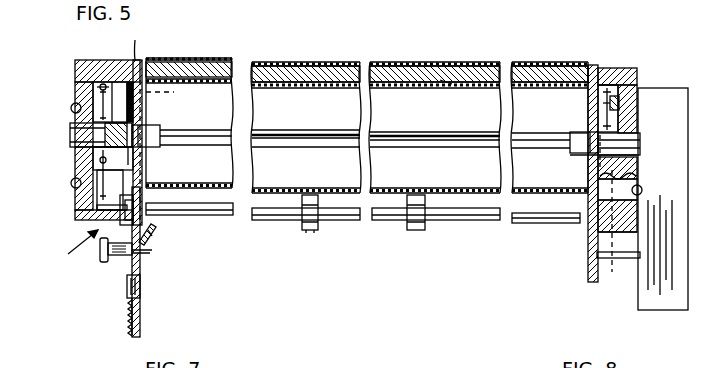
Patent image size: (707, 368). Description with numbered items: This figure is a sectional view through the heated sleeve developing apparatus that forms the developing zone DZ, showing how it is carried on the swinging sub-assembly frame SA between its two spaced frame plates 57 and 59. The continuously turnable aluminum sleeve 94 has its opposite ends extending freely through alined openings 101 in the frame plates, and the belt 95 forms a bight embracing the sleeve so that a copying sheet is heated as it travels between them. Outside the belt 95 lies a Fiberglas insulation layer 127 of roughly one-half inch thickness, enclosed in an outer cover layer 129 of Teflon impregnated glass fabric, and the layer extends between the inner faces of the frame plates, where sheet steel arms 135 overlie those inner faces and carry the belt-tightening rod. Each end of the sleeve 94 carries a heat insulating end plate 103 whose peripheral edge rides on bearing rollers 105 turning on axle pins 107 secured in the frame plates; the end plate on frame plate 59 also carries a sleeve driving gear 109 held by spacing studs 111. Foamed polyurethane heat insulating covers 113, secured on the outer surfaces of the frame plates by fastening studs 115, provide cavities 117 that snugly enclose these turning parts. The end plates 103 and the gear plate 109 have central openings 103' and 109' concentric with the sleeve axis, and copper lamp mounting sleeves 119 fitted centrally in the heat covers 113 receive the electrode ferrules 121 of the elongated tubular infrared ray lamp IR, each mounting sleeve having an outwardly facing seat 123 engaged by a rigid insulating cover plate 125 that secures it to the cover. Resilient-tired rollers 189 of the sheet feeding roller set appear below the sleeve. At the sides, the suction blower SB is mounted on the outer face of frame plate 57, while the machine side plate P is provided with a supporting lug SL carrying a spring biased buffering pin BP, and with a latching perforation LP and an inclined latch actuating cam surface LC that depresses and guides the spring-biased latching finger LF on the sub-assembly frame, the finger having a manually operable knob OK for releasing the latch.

The heat insulating cover 113 is at (75, 67).
The arm 135 is at (146, 60).
The frame plate 59 is at (132, 42).
The end plate 103 is at (377, 107).
The central opening 103' is at (364, 155).
The sleeve driving gear 109 is at (65, 86).
The central opening 109' is at (53, 162).
The spacing stud 111 is at (99, 97).
The fastening stud 115 is at (70, 109).
The cavity 117 is at (110, 197).
The cover plate 125 is at (85, 211).
The lamp mounting sleeve 119 is at (85, 133).
The electrode ferrule 121 is at (148, 132).
The seat 123 is at (74, 147).
The opening 101 is at (596, 229).
The Fiberglas insulation layer 127 is at (199, 60).
The belt 95 is at (287, 62).
The sleeve 94 is at (316, 128).
The outer cover layer 129 is at (373, 62).
The developing zone DZ is at (455, 82).
The infrared ray lamp IR is at (423, 138).
The roller 189 is at (308, 235).
The frame plate 57 is at (597, 66).
The bearing roller 105 is at (607, 90).
The axle pin 107 is at (620, 105).
The suction blower SB is at (663, 199).
The frame plate P is at (142, 291).
The latching perforation LP is at (149, 246).
The latch actuating cam surface LC is at (155, 230).
The latching finger LF is at (148, 252).
The manually operable knob OK is at (102, 262).
The sub-assembly frame SA is at (66, 249).
The supporting lug SL is at (125, 296).
The buffering pin BP is at (131, 338).